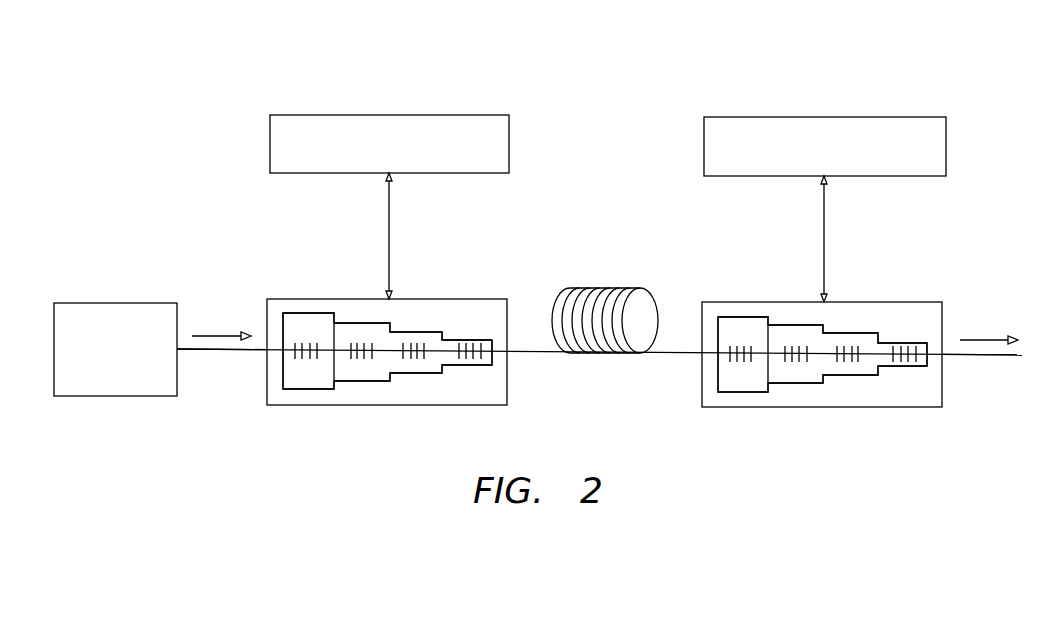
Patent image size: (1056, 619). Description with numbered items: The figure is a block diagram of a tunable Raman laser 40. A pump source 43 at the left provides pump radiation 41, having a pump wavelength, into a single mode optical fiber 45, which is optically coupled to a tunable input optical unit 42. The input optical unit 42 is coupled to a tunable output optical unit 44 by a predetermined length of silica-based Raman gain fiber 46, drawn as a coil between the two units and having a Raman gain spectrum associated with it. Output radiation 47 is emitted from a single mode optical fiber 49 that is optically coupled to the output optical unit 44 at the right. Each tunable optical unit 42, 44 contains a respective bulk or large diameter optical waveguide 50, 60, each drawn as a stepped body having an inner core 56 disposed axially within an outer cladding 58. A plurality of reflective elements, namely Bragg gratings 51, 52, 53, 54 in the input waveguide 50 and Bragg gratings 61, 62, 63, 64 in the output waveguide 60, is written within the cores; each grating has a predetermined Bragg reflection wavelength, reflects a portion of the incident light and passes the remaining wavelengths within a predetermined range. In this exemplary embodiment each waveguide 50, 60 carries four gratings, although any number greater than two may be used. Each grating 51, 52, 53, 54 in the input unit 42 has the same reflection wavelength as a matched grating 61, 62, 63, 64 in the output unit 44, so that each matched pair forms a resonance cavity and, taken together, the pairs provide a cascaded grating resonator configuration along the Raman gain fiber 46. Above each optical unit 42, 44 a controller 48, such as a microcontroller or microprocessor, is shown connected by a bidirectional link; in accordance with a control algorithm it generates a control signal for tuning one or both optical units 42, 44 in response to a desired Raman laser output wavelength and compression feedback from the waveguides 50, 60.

The tunable Raman laser 40 is at (641, 136).
The pump radiation 41 is at (213, 303).
The tunable input optical unit 42 is at (387, 314).
The pump source 43 is at (115, 303).
The tunable output optical unit 44 is at (822, 317).
The single mode optical fiber 45 is at (213, 351).
The Raman gain fiber 46 is at (600, 280).
The output radiation 47 is at (985, 315).
The controller 48 is at (381, 107).
The single mode optical fiber 49 is at (988, 357).
The large diameter optical waveguide 50 is at (383, 389).
The Bragg grating 51 is at (302, 342).
The Bragg grating 52 is at (350, 342).
The Bragg grating 53 is at (423, 342).
The Bragg grating 54 is at (482, 342).
The inner core 56 is at (333, 352).
The outer cladding 58 is at (307, 382).
The large diameter optical waveguide 60 is at (818, 391).
The Bragg grating 61 is at (736, 342).
The Bragg grating 62 is at (783, 342).
The Bragg grating 63 is at (858, 342).
The Bragg grating 64 is at (914, 342).